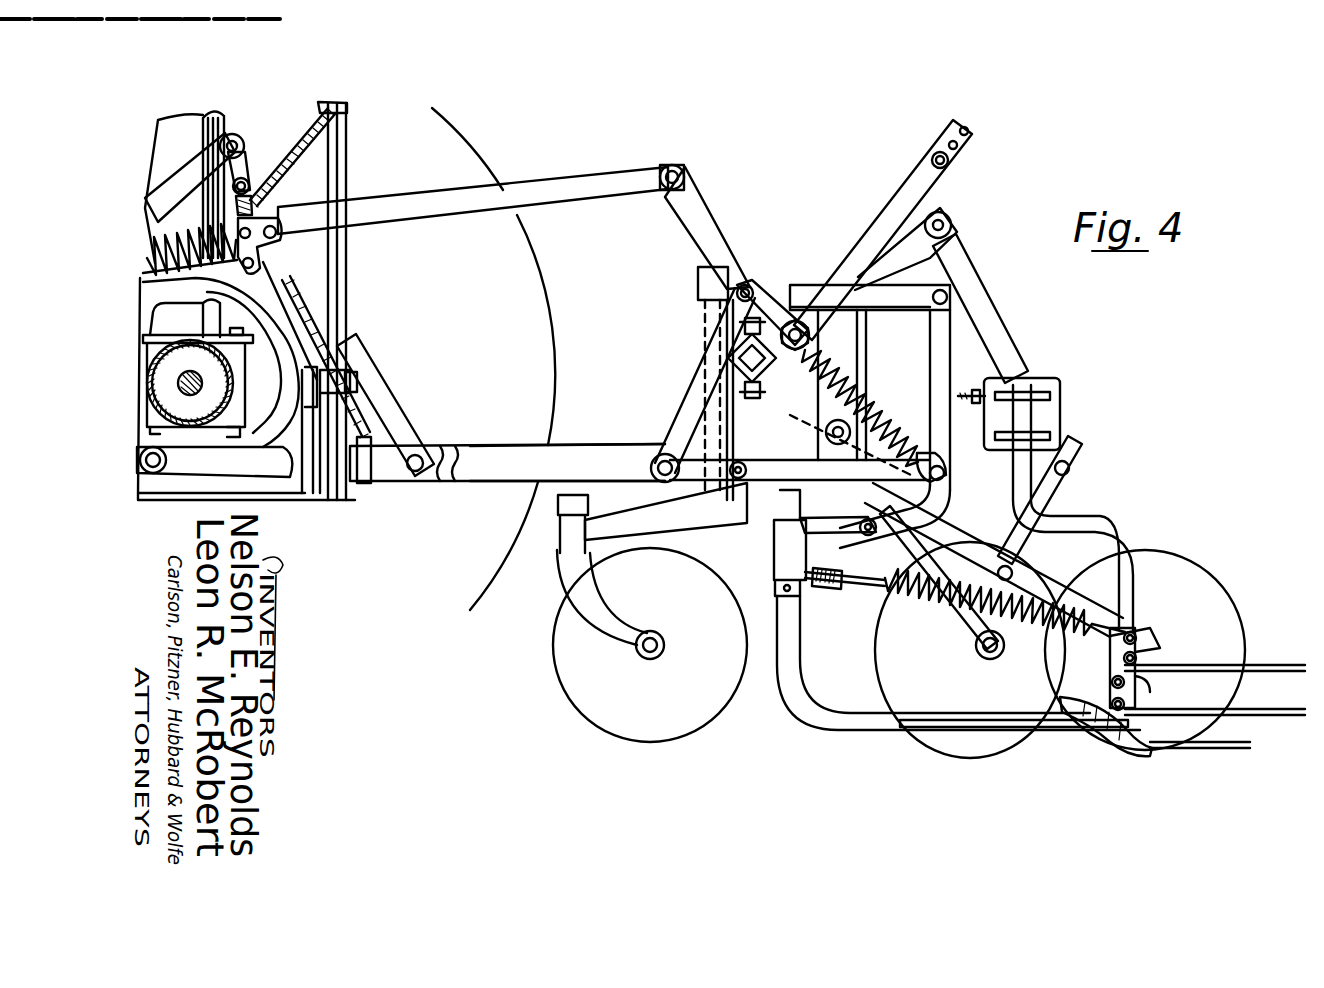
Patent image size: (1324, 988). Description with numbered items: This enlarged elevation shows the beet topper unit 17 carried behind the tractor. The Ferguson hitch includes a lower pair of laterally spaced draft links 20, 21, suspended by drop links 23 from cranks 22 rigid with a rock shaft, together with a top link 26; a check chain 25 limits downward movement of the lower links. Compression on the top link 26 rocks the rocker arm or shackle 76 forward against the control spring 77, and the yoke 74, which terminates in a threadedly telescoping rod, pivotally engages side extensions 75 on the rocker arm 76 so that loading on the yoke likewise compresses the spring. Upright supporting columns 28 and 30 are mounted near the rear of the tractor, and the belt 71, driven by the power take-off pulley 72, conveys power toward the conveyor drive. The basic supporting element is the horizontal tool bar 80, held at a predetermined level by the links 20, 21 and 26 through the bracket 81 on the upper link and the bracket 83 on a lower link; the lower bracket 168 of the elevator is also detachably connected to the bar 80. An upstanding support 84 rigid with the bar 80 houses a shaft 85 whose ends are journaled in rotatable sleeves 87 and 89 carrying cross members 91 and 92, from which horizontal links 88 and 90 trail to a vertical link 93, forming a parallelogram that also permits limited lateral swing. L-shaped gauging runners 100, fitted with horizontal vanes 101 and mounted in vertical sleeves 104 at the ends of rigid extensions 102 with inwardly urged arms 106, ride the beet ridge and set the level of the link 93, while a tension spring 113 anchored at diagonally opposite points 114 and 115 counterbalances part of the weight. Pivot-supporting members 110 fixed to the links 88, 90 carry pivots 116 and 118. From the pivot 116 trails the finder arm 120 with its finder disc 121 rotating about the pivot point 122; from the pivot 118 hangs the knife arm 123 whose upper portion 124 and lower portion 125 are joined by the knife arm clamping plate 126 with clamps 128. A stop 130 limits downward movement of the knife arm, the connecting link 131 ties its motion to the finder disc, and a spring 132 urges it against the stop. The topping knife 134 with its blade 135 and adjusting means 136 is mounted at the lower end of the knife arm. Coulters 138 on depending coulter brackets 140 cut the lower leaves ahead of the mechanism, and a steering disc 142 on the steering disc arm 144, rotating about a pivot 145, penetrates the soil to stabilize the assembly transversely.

The planter unit 17 is at (1168, 476).
The draft link 20 is at (436, 446).
The draft link 21 is at (481, 447).
The crank 22 is at (182, 190).
The drop link 23 is at (366, 372).
The check chain 25 is at (357, 428).
The top link 26 is at (403, 212).
The upright supporting column 28 is at (200, 305).
The upright supporting column 30 is at (222, 133).
The belt 71 is at (338, 292).
The power take-off pulley 72 is at (358, 484).
The yoke 74 is at (318, 131).
The side extension 75 is at (241, 165).
The rocker arm 76 is at (274, 222).
The control spring 77 is at (185, 242).
The tool bar 80 is at (733, 345).
The bracket 81 is at (705, 224).
The bracket 83 is at (686, 420).
The upstanding support 84 is at (702, 342).
The shaft 85 is at (703, 364).
The rotatable sleeve 87 is at (699, 292).
The horizontal link 88 is at (906, 292).
The rotatable sleeve 89 is at (670, 480).
The horizontal link 90 is at (780, 476).
The cross member 91 is at (746, 286).
The cross member 92 is at (743, 479).
The vertical link 93 is at (940, 353).
The gauging runner 100 is at (866, 732).
The horizontal vane 101 is at (928, 730).
The rigid extension 102 is at (843, 533).
The vertical sleeve 104 is at (776, 550).
The arm 106 is at (832, 520).
The pivot-supporting member 110 is at (853, 358).
The tension spring 113 is at (860, 408).
The anchoring point 114 is at (773, 304).
The anchoring point 115 is at (946, 480).
The pivot 116 is at (825, 431).
The pivot 118 is at (947, 220).
The finder arm 120 is at (966, 532).
The finder disc 121 is at (1214, 586).
The pivot point 122 is at (1140, 642).
The knife arm 123 is at (1061, 400).
The upper portion 124 is at (985, 294).
The lower portion 125 is at (1128, 533).
The knife arm clamping plate 126 is at (1060, 396).
The clamp 128 is at (1036, 394).
The stop 130 is at (975, 404).
The connecting link 131 is at (1060, 500).
The spring 132 is at (1045, 632).
The topping knife 134 is at (1156, 760).
The blade 135 is at (1190, 745).
The adjusting means 136 is at (1140, 686).
The coulter 138 is at (570, 677).
The coulter bracket 140 is at (660, 514).
The steering disc 142 is at (876, 656).
The steering disc arm 144 is at (956, 620).
The pivot 145 is at (978, 651).
The lower bracket 168 is at (900, 200).